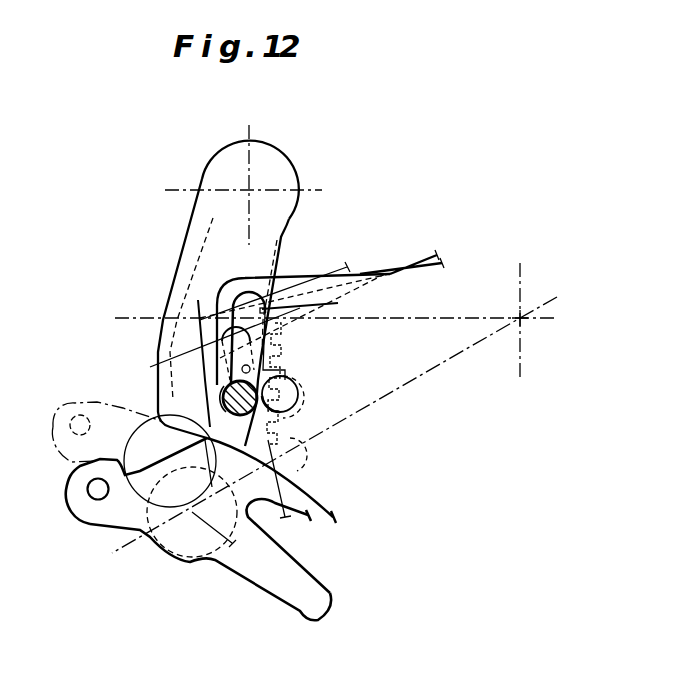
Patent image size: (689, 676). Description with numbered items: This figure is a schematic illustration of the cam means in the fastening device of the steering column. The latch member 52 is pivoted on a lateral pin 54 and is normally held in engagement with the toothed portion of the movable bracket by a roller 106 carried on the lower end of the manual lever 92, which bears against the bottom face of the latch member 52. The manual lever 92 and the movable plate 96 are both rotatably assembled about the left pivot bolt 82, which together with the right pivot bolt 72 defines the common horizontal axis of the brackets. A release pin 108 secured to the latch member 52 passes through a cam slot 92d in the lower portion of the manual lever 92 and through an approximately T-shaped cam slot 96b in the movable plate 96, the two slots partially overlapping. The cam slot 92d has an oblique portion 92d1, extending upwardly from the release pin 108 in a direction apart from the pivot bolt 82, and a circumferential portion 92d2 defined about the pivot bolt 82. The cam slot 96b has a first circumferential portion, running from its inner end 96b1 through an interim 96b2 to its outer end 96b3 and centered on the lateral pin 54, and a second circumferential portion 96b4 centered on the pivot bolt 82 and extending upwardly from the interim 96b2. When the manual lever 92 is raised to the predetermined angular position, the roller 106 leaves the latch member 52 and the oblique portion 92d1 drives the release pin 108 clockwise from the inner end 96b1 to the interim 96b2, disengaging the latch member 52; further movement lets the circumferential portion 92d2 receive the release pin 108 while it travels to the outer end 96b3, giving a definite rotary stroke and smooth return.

The latch member 52 is at (203, 220).
The lateral pin 54 is at (252, 188).
The lateral pivot bolt 72 is at (559, 337).
The lateral pivot bolt 82 is at (523, 322).
The manual lever 92 is at (100, 513).
The cam slot 92d is at (295, 525).
The oblique portion 92d1 is at (307, 445).
The circumferential portion 92d2 is at (256, 363).
The movable plate 96 is at (310, 287).
The cam slot 96b is at (200, 320).
The inner end of first cam slot portion 96b1 is at (291, 382).
The interim of first cam slot portion 96b2 is at (296, 395).
The outer end of first cam slot portion 96b3 is at (222, 404).
The second cam slot portion 96b4 is at (327, 308).
The roller 106 is at (181, 537).
The release pin 108 is at (225, 389).